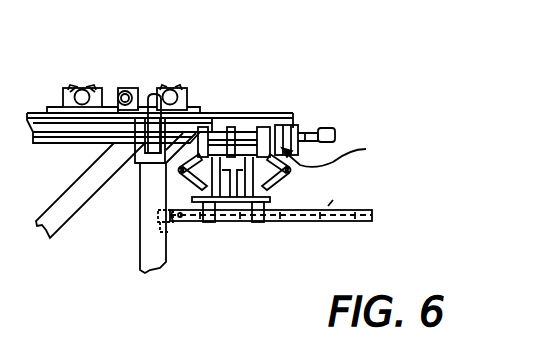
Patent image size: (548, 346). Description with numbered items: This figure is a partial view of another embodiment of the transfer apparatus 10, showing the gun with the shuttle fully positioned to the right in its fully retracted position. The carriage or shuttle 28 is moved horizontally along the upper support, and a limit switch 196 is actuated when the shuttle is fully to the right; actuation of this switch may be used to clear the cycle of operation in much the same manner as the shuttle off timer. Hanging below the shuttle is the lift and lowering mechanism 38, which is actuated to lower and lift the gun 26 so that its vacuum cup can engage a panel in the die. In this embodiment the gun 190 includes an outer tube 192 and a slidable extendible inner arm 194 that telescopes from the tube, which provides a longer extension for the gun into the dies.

The transfer apparatus 10 is at (173, 62).
The carriage or shuttle 28 is at (203, 95).
The limit switch 196 is at (297, 125).
The lift and lowering mechanism 38 is at (240, 226).
The gun 26 is at (372, 218).
The outer tube 192 is at (349, 222).
The inner arm 194 is at (324, 229).
The gun 190 is at (395, 212).